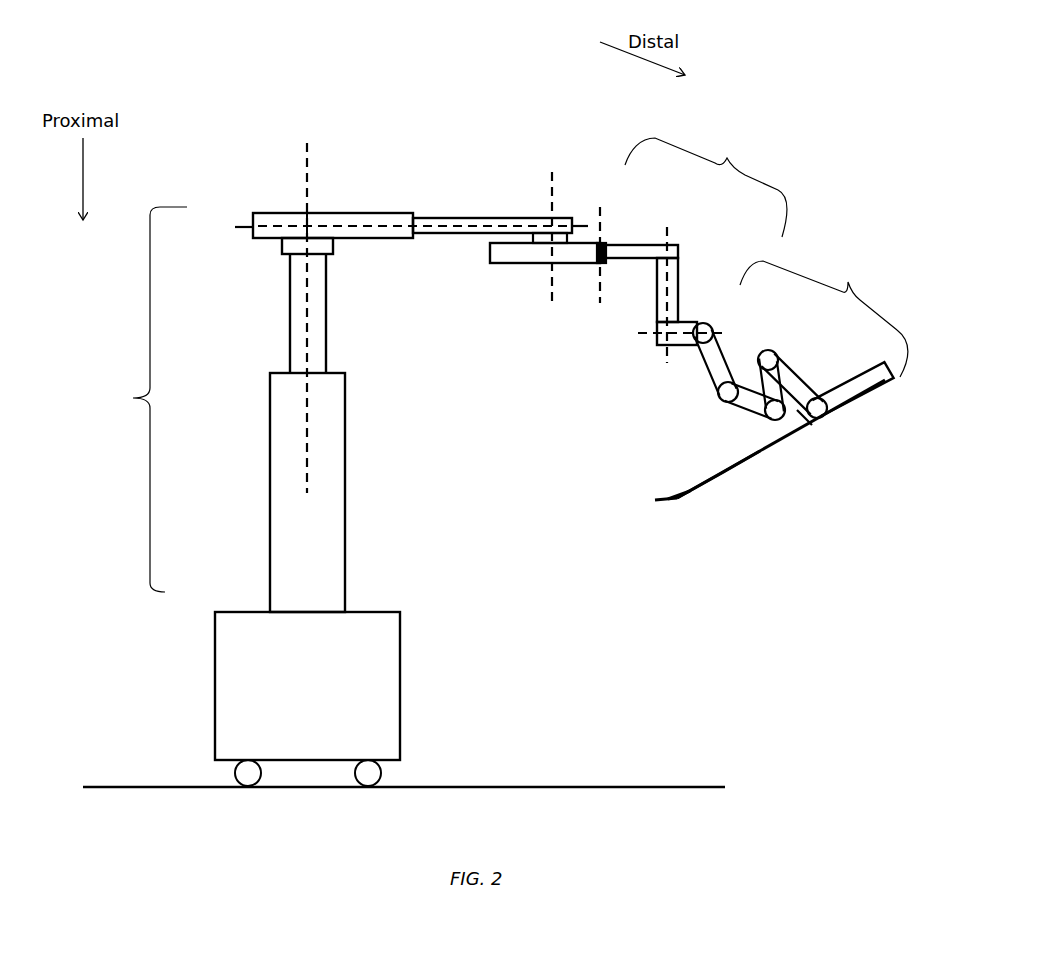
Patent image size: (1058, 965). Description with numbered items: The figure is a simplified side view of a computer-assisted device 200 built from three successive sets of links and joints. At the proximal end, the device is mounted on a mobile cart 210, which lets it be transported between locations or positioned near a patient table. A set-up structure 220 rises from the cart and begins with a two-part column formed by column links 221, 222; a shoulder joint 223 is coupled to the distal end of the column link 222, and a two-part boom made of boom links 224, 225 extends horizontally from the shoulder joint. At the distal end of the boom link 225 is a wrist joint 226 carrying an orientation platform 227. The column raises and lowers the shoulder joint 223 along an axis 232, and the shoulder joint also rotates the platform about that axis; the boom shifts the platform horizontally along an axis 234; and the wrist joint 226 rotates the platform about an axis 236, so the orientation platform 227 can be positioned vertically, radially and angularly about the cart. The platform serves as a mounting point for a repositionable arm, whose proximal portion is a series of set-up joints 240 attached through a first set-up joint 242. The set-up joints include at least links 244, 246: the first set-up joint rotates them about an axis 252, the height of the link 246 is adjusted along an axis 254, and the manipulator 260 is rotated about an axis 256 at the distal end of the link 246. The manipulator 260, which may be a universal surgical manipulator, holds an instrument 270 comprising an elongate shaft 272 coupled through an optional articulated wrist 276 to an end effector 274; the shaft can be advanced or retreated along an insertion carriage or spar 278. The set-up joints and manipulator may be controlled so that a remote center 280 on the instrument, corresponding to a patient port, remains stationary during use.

The computer-assisted device 200 is at (253, 68).
The mobile cart 210 is at (215, 682).
The set-up structure 220 is at (247, 362).
The column link 221 is at (345, 457).
The column link 222 is at (328, 310).
The shoulder joint 223 is at (268, 256).
The boom link 224 is at (345, 213).
The boom link 225 is at (450, 218).
The wrist joint 226 is at (467, 236).
The orientation platform 227 is at (518, 264).
The axis 232 is at (307, 145).
The axis 234 is at (240, 227).
The axis 236 is at (552, 168).
The set-up joints 240 is at (675, 255).
The first set-up joint 242 is at (603, 245).
The link 244 is at (680, 250).
The link 246 is at (655, 337).
The axis 252 is at (600, 312).
The axis 254 is at (667, 367).
The axis 256 is at (727, 333).
The manipulator 260 is at (772, 335).
The instrument 270 is at (788, 438).
The elongate shaft 272 is at (700, 485).
The end effector 274 is at (663, 503).
The articulated wrist 276 is at (677, 503).
The insertion carriage or spar 278 is at (873, 393).
The remote center 280 is at (728, 473).